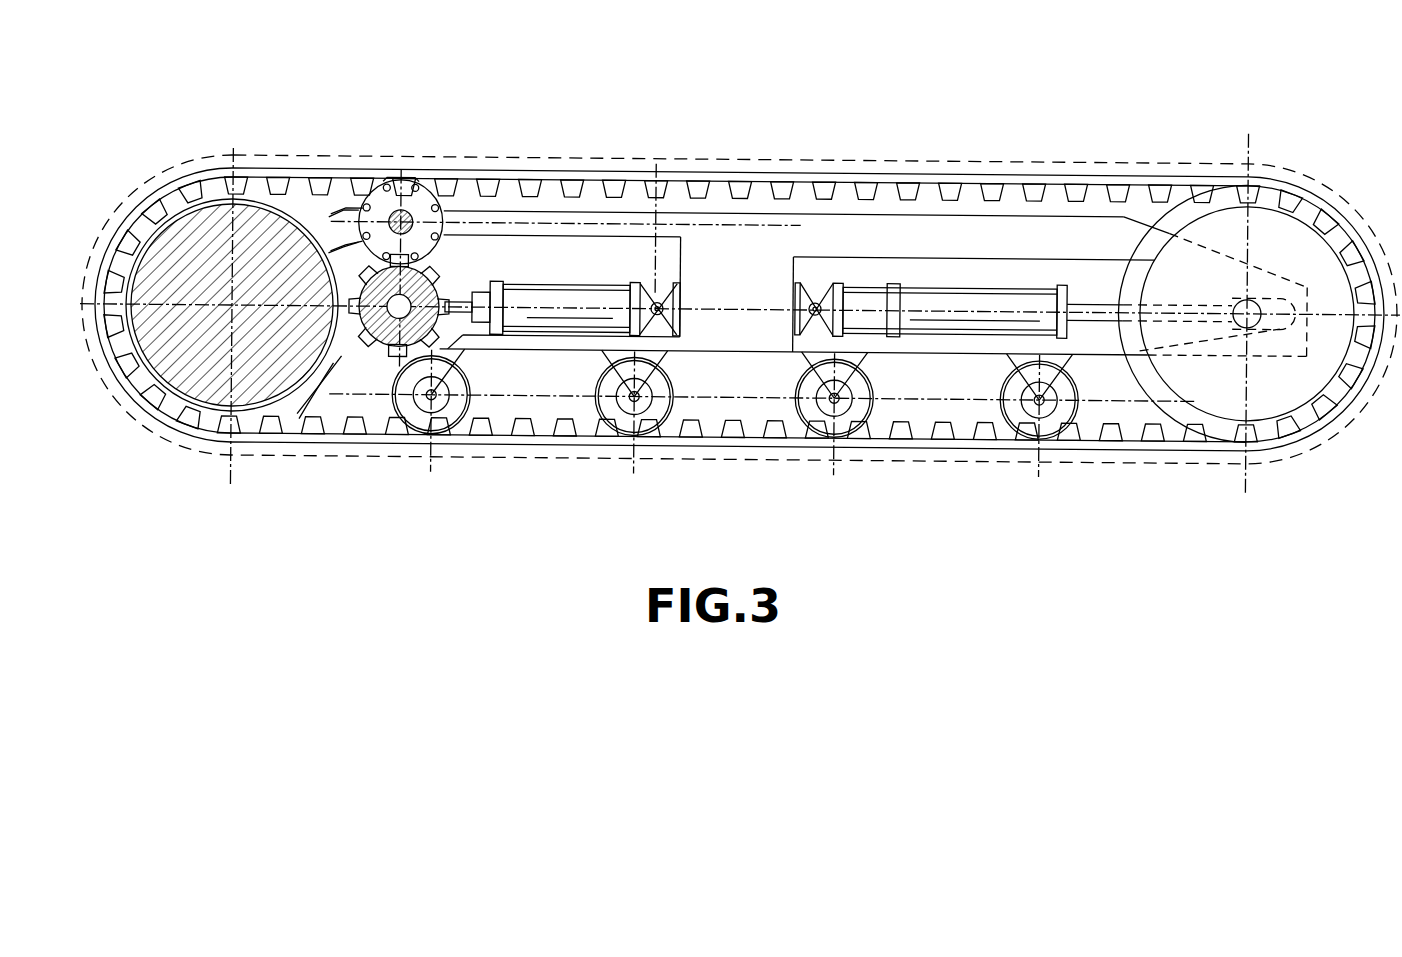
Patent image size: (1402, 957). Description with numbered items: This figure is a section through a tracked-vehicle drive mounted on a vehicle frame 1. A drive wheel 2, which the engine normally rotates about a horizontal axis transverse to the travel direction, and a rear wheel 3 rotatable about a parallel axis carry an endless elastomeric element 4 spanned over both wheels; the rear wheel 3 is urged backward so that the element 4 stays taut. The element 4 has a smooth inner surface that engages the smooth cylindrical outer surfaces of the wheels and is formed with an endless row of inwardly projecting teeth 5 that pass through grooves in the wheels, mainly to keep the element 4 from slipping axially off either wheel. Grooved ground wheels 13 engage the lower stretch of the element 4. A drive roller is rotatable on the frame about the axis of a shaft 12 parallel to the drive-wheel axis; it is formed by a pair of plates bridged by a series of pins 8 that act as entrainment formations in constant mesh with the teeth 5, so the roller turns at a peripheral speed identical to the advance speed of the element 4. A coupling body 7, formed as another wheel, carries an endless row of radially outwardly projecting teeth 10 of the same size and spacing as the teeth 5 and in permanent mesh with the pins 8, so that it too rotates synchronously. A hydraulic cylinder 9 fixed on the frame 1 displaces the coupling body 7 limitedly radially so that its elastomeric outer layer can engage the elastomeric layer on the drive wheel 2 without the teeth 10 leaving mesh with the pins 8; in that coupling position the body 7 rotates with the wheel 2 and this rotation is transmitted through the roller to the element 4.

The vehicle frame 1 is at (743, 237).
The drive wheel 2 is at (183, 250).
The rear wheel 3 is at (1265, 375).
The endless elastomeric element 4 is at (992, 182).
The teeth 5 is at (900, 192).
The coupling body 7 is at (387, 353).
The pins 8 is at (353, 208).
The hydraulic cylinder 9 is at (560, 320).
The teeth 10 is at (297, 410).
The shaft 12 is at (403, 223).
The grooved ground wheels 13 is at (418, 417).